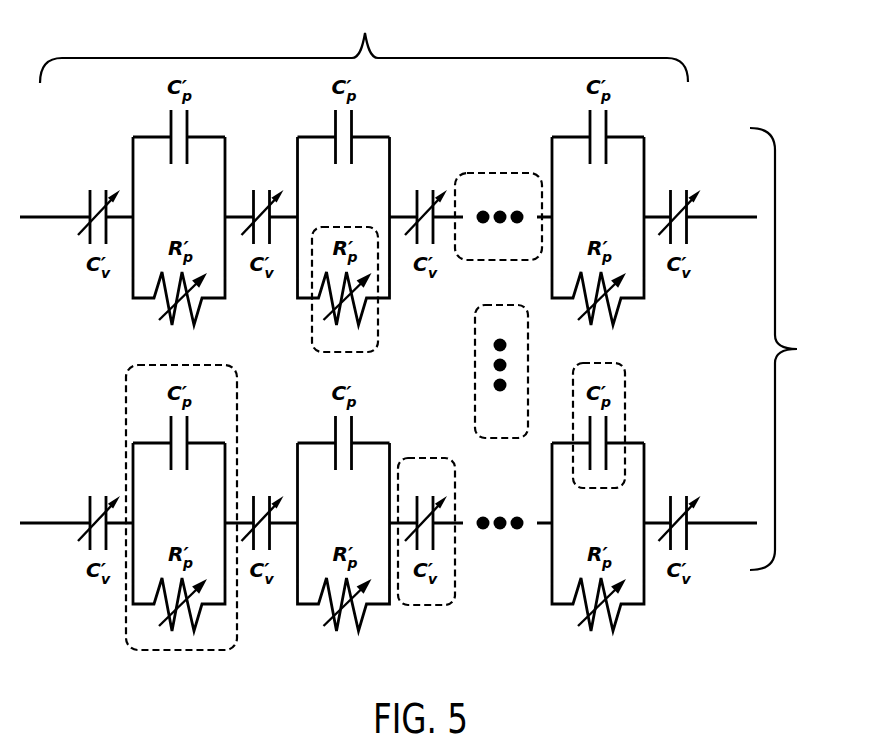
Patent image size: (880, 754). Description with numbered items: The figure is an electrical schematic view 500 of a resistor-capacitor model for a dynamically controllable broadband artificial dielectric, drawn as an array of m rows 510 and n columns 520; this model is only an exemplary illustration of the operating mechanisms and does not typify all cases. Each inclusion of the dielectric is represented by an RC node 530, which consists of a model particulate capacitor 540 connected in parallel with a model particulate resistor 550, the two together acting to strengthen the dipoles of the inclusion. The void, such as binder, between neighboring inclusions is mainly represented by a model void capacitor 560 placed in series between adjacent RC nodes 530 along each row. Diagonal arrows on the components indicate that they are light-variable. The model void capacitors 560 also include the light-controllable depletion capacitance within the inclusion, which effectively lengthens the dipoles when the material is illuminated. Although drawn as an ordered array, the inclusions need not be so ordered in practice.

The electrical schematic view 500 is at (731, 82).
The m rows 510 is at (503, 171).
The n columns 520 is at (473, 378).
The RC node 530 is at (185, 652).
The model particulate capacitor C_p' 540 is at (627, 402).
The model particulate resistor R_p' 550 is at (310, 338).
The model void capacitor C_v' 560 is at (425, 607).